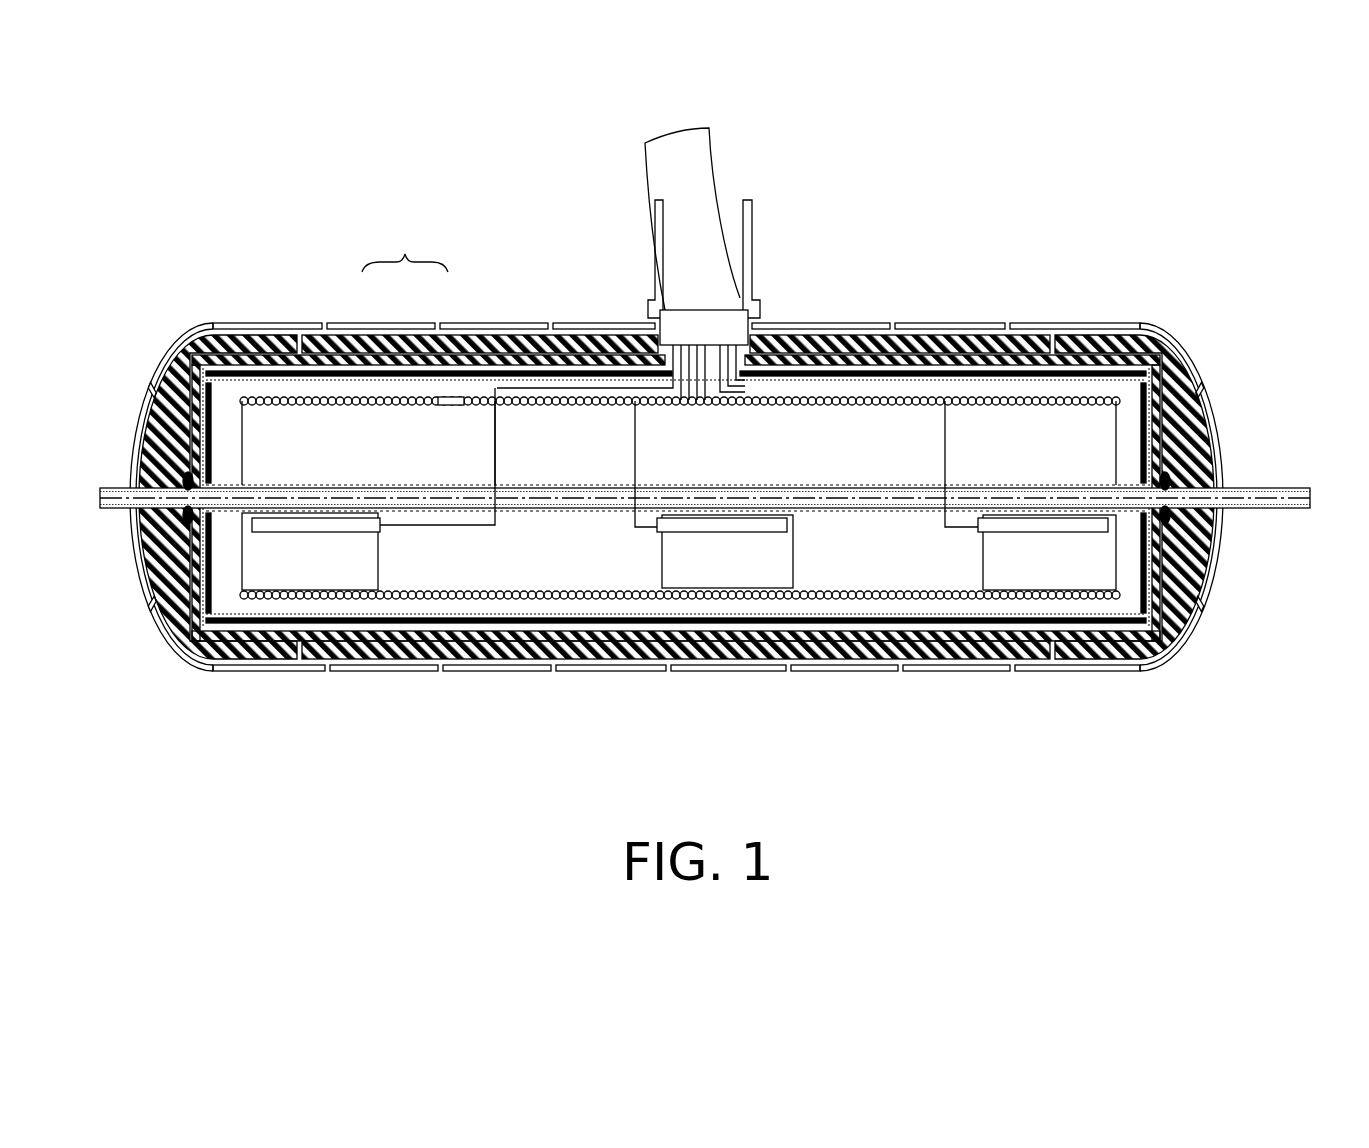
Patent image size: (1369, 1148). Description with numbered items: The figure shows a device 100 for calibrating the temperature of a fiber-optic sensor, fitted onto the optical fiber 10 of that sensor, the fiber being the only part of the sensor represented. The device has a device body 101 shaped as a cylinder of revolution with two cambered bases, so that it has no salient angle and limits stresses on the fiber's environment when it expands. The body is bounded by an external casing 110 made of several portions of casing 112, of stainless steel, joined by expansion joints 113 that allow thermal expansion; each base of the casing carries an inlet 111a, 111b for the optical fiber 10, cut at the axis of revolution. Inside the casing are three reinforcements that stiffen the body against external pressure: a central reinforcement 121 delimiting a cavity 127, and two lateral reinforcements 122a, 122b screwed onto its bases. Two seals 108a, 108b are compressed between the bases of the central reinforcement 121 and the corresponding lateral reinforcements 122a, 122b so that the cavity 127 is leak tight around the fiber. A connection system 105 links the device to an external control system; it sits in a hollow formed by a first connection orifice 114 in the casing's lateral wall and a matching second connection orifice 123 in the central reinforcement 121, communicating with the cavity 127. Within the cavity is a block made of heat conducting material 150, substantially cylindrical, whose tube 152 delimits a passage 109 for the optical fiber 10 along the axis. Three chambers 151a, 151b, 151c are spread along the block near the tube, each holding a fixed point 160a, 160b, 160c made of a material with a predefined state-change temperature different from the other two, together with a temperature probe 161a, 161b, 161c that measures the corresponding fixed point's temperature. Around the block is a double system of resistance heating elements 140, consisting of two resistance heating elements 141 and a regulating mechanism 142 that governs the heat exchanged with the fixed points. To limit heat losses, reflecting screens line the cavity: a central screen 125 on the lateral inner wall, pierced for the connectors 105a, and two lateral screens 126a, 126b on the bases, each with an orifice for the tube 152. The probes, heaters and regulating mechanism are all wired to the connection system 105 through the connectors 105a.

The device 100 is at (1050, 222).
The optical fiber 10 is at (1302, 510).
The device body 101 is at (935, 335).
The connection system 105 is at (690, 300).
The connectors 105a is at (675, 385).
The seal 108a is at (185, 480).
The seal 108b is at (1168, 480).
The passage 109 is at (150, 497).
The external casing 110 is at (196, 333).
The inlet 111a is at (122, 514).
The inlet 111b is at (1218, 492).
The portions of casing 112 is at (1052, 342).
The expansion joints 113 is at (1010, 335).
The first connection orifice 114 is at (657, 320).
The central reinforcement 121 is at (330, 335).
The lateral reinforcement 122a is at (162, 392).
The lateral reinforcement 122b is at (1205, 362).
The second connection orifice 123 is at (752, 333).
The central screen 125 is at (482, 630).
The lateral screen 126a is at (206, 560).
The lateral screen 126b is at (1145, 600).
The cavity 127 is at (285, 395).
The double system of resistance heating elements 140 is at (555, 285).
The resistance heating elements 141 is at (400, 396).
The regulating mechanism 142 is at (450, 396).
The block made of heat conducting material 150 is at (1078, 420).
The chamber 151a is at (305, 562).
The chamber 151b is at (725, 565).
The chamber 151c is at (1045, 568).
The tube 152 is at (1140, 514).
The fixed point 160a is at (362, 575).
The fixed point 160b is at (778, 575).
The fixed point 160c is at (1097, 575).
The temperature probe 161a is at (268, 527).
The temperature probe 161b is at (690, 525).
The temperature probe 161c is at (1015, 525).